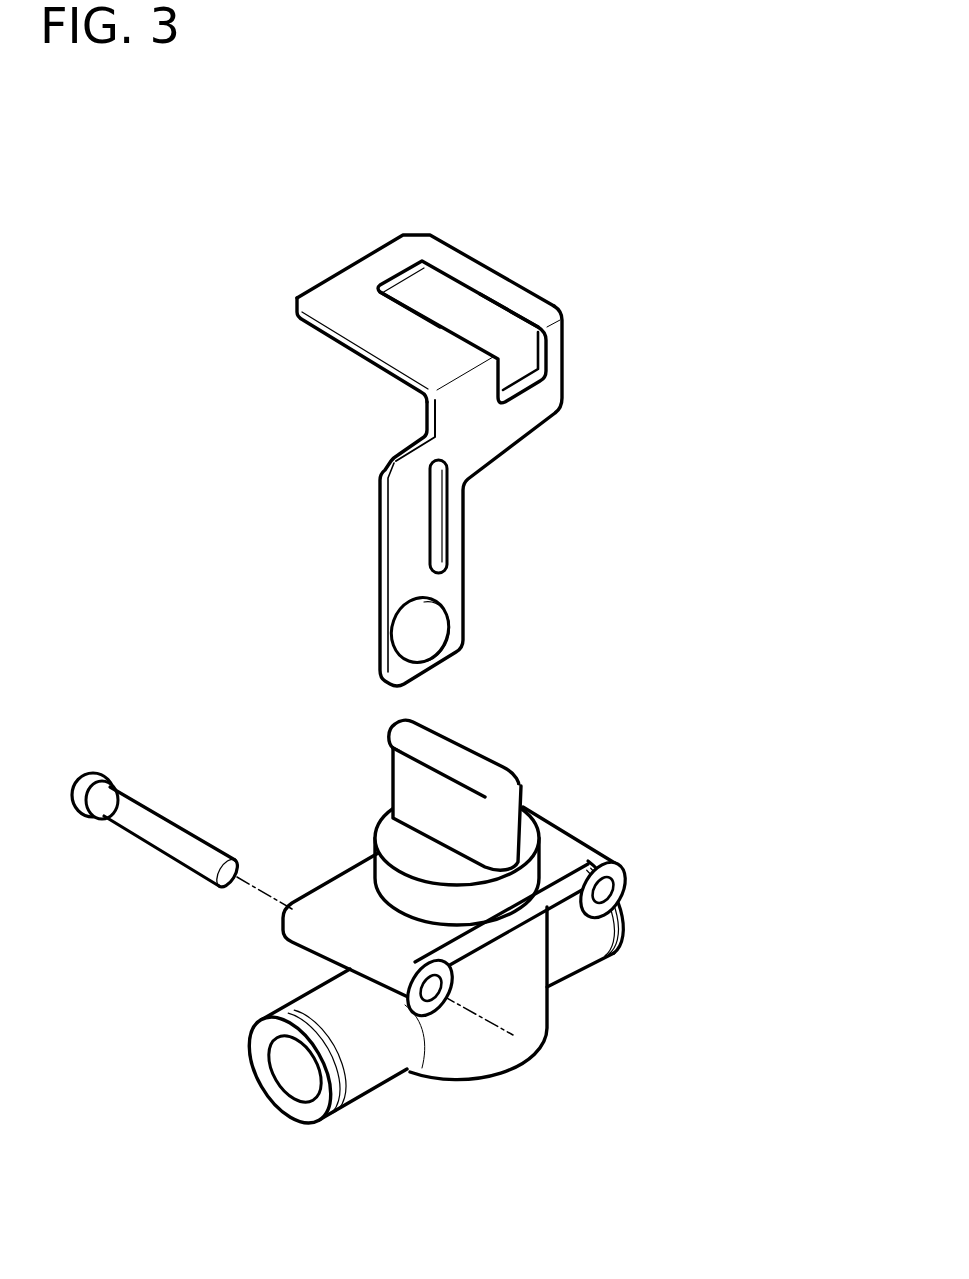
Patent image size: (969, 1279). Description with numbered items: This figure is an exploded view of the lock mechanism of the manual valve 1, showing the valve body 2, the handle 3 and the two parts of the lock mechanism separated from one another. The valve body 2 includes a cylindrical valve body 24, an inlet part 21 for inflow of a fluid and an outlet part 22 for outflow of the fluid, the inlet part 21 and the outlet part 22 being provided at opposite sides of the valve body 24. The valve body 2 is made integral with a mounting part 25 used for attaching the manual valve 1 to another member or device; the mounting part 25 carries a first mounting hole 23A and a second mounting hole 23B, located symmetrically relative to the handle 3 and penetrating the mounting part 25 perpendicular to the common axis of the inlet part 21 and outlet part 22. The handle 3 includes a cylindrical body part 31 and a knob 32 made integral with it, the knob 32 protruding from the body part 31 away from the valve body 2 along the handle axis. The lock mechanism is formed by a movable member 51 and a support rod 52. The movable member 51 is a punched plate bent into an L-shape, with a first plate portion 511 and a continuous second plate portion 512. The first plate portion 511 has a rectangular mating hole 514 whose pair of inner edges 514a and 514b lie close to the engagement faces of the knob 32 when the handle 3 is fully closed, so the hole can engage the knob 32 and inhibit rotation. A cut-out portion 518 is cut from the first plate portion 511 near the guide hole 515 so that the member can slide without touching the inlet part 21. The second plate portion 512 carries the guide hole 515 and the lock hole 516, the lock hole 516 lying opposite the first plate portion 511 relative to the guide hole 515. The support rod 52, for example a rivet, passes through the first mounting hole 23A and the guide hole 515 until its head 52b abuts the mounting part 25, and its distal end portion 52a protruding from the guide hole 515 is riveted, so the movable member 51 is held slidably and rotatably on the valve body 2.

The manual valve 1 is at (168, 419).
The valve body 2 is at (533, 1057).
The inlet part 21 is at (321, 1002).
The outlet part 22 is at (580, 948).
The first mounting hole 23A is at (437, 1003).
The second mounting hole 23B is at (612, 887).
The valve body 24 is at (545, 1010).
The mounting part 25 is at (560, 843).
The handle 3 is at (303, 692).
The body part 31 is at (377, 830).
The knob 32 is at (403, 735).
The movable member 51 is at (447, 263).
The first plate portion 511 is at (492, 283).
The second plate portion 512 is at (540, 408).
The mating hole 514 is at (423, 297).
The inner edge 514a is at (378, 288).
The inner edge 514b is at (520, 313).
The guide hole 515 is at (440, 532).
The lock hole 516 is at (440, 650).
The cut-out portion 518 is at (353, 357).
The support rod 52 is at (135, 800).
The distal end portion 52a is at (233, 868).
The head 52b is at (88, 782).